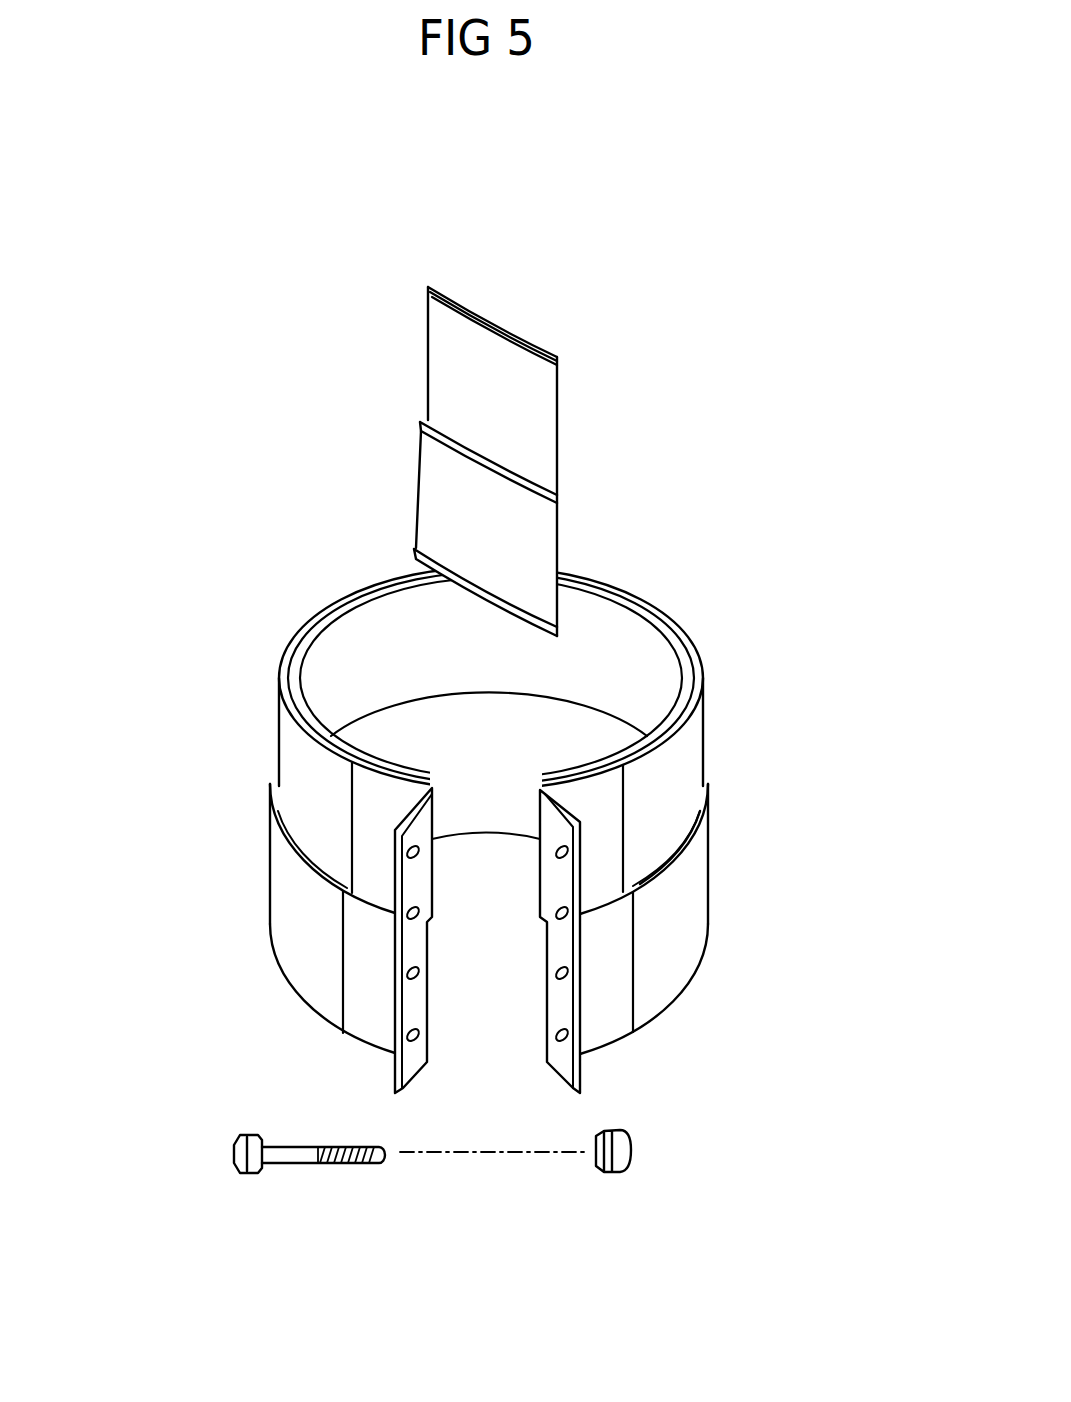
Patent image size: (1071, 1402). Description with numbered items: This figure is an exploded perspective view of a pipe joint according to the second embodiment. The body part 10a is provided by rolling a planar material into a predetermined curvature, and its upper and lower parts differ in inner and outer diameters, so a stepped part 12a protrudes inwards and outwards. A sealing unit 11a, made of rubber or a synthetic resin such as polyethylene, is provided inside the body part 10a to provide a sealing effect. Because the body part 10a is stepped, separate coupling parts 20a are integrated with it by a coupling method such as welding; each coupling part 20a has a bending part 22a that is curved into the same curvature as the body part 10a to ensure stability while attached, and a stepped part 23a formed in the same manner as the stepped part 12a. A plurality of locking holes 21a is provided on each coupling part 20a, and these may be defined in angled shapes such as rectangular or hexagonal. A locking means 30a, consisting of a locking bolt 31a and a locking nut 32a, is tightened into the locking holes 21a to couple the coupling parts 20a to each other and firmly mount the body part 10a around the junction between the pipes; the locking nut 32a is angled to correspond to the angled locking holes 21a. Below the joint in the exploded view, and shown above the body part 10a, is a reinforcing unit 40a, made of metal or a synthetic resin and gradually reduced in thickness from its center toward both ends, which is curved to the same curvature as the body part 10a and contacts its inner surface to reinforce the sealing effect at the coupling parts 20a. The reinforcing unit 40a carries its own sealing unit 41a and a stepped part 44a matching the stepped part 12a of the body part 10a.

The body part 10a is at (290, 902).
The sealing unit 11a is at (286, 652).
The stepped part 12a is at (683, 857).
The coupling part 20a is at (366, 958).
The locking hole 21a is at (568, 972).
The bending part 22a is at (370, 825).
The stepped part 23a is at (630, 895).
The locking means 30a is at (440, 1264).
The locking bolt 31a is at (302, 1163).
The locking nut 32a is at (612, 1216).
The reinforcing unit 40a is at (526, 432).
The sealing unit 41a is at (477, 318).
The stepped part 44a is at (425, 427).